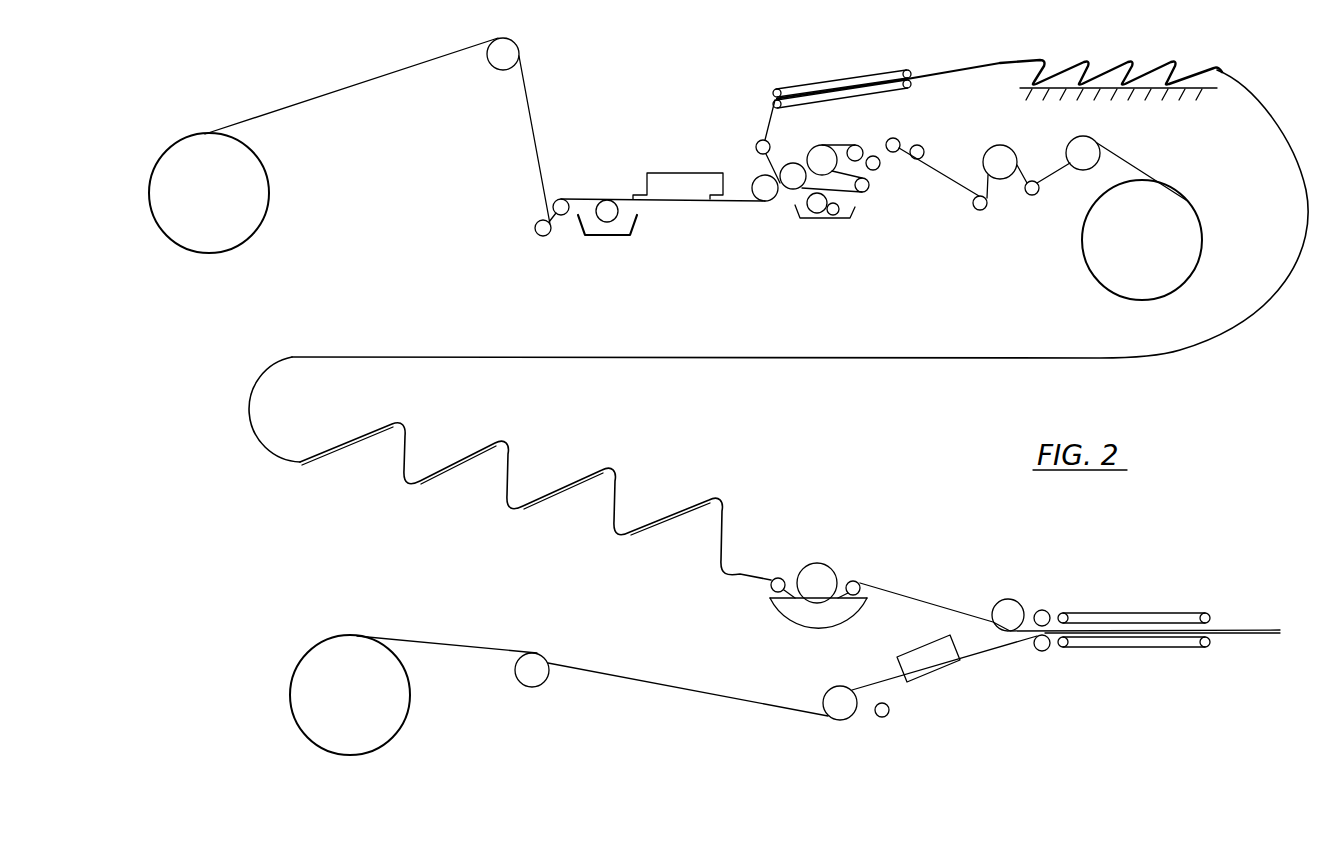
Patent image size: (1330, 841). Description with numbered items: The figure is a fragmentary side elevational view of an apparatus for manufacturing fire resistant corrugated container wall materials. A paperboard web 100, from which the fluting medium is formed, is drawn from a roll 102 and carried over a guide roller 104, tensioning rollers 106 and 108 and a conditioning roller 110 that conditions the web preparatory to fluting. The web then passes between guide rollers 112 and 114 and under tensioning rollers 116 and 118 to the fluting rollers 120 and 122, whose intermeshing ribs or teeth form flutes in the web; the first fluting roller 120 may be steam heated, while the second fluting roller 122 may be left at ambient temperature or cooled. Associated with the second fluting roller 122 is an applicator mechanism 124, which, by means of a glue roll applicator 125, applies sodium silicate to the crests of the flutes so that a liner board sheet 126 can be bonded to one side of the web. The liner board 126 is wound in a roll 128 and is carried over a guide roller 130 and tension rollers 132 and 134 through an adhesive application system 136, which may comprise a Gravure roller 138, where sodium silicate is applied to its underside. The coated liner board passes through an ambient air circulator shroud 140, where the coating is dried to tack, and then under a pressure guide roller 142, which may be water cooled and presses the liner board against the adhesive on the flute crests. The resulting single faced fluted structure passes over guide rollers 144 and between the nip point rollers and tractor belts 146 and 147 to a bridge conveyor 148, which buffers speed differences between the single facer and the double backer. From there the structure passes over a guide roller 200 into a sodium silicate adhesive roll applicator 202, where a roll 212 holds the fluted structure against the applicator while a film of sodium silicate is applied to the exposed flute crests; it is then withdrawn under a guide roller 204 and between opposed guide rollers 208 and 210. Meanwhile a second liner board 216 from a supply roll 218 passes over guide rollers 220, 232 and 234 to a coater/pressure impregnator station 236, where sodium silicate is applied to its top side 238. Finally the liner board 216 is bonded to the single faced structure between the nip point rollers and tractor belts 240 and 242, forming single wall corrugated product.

The paperboard web 100 is at (1140, 168).
The roll 102 is at (1125, 250).
The guide roller 104 is at (1090, 150).
The tensioning roller 106 is at (1031, 196).
The tensioning roller 108 is at (985, 210).
The conditioning roller 110 is at (1000, 148).
The guide roller 112 is at (920, 147).
The guide roller 114 is at (855, 145).
The tensioning roller 116 is at (895, 141).
The tensioning roller 118 is at (878, 168).
The first fluting roller 120 is at (816, 147).
The second fluting roller 122 is at (794, 163).
The applicator mechanism 124 is at (832, 222).
The glue roll applicator 125 is at (816, 215).
The liner board sheet 126 is at (338, 88).
The roll 128 is at (192, 203).
The guide roller 130 is at (518, 48).
The tension roller 132 is at (536, 234).
The tension roller 134 is at (566, 200).
The adhesive application system 136 is at (633, 222).
The Gravure roller 138 is at (614, 222).
The ambient air circulator shroud 140 is at (687, 172).
The pressure guide roller 142 is at (758, 197).
The guide roller 144 is at (757, 150).
The tractor belt 146 is at (860, 73).
The tractor belt 147 is at (893, 88).
The bridge conveyor 148 is at (1172, 92).
The guide roller 200 is at (780, 578).
The sodium silicate adhesive roll applicator 202 is at (805, 618).
The guide roller 204 is at (1014, 608).
The guide roller 208 is at (1043, 611).
The guide roller 210 is at (1038, 653).
The roll 212 is at (830, 575).
The liner board 216 is at (443, 645).
The supply roll 218 is at (333, 705).
The guide roller 220 is at (536, 684).
The guide roller 232 is at (840, 720).
The guide roller 234 is at (890, 709).
The coater/pressure impregnator station 236 is at (912, 667).
The top side 238 is at (893, 690).
The tractor belt 240 is at (1102, 610).
The tractor belt 242 is at (1132, 650).